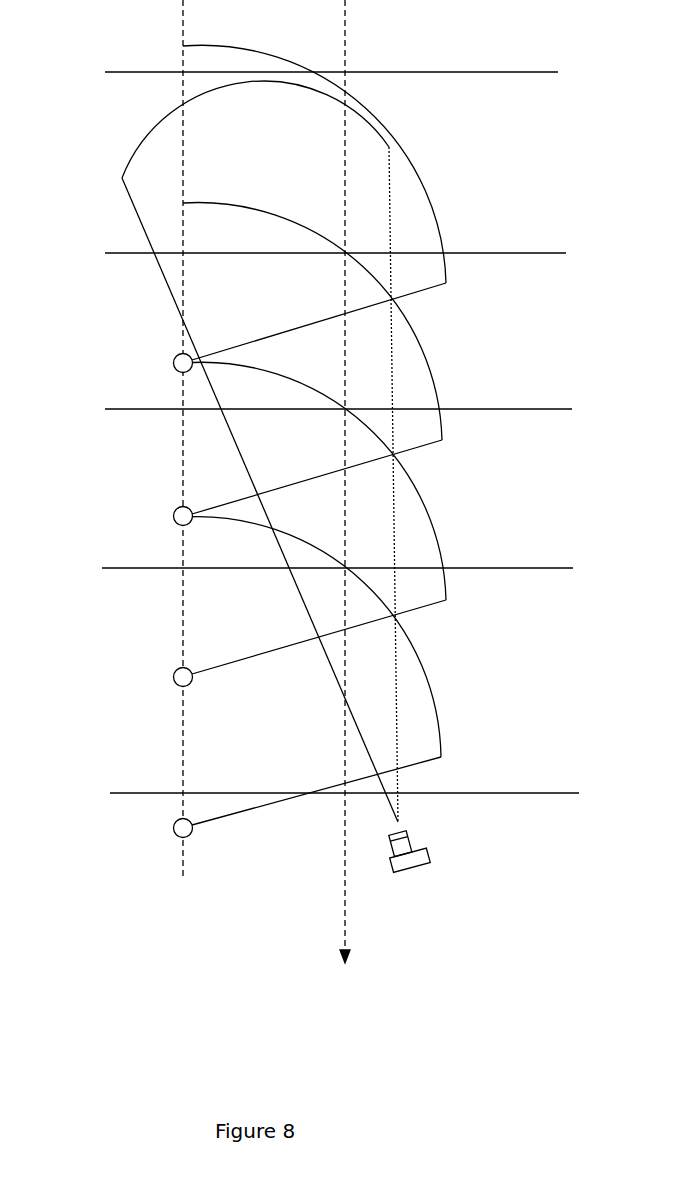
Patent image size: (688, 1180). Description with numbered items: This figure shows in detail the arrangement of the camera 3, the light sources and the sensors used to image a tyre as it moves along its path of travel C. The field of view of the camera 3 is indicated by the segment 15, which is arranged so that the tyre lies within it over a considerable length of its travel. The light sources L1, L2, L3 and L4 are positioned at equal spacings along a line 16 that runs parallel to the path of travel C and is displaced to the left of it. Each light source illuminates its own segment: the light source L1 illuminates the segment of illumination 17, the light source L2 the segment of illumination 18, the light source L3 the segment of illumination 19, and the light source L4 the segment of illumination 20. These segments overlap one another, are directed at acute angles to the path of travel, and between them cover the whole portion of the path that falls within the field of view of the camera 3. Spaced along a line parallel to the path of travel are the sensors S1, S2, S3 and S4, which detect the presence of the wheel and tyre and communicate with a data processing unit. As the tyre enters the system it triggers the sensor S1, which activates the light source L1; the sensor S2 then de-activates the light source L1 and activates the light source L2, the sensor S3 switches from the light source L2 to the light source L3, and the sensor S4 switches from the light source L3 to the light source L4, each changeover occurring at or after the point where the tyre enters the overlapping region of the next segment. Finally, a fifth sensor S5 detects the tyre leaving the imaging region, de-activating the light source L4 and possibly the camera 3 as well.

The camera 3 is at (415, 870).
The segment 15 is at (391, 165).
The line 16 is at (184, 459).
The segment of illumination 17 is at (441, 230).
The segment of illumination 18 is at (437, 382).
The segment of illumination 19 is at (440, 542).
The segment of illumination 20 is at (444, 737).
The sensor S1 is at (310, 72).
The sensor S2 is at (314, 254).
The sensor S3 is at (317, 410).
The sensor S4 is at (317, 569).
The fifth sensor S5 is at (320, 794).
The light source L1 is at (165, 365).
The light source L2 is at (165, 518).
The light source L3 is at (165, 679).
The light source L4 is at (166, 830).
The path of travel C is at (345, 501).